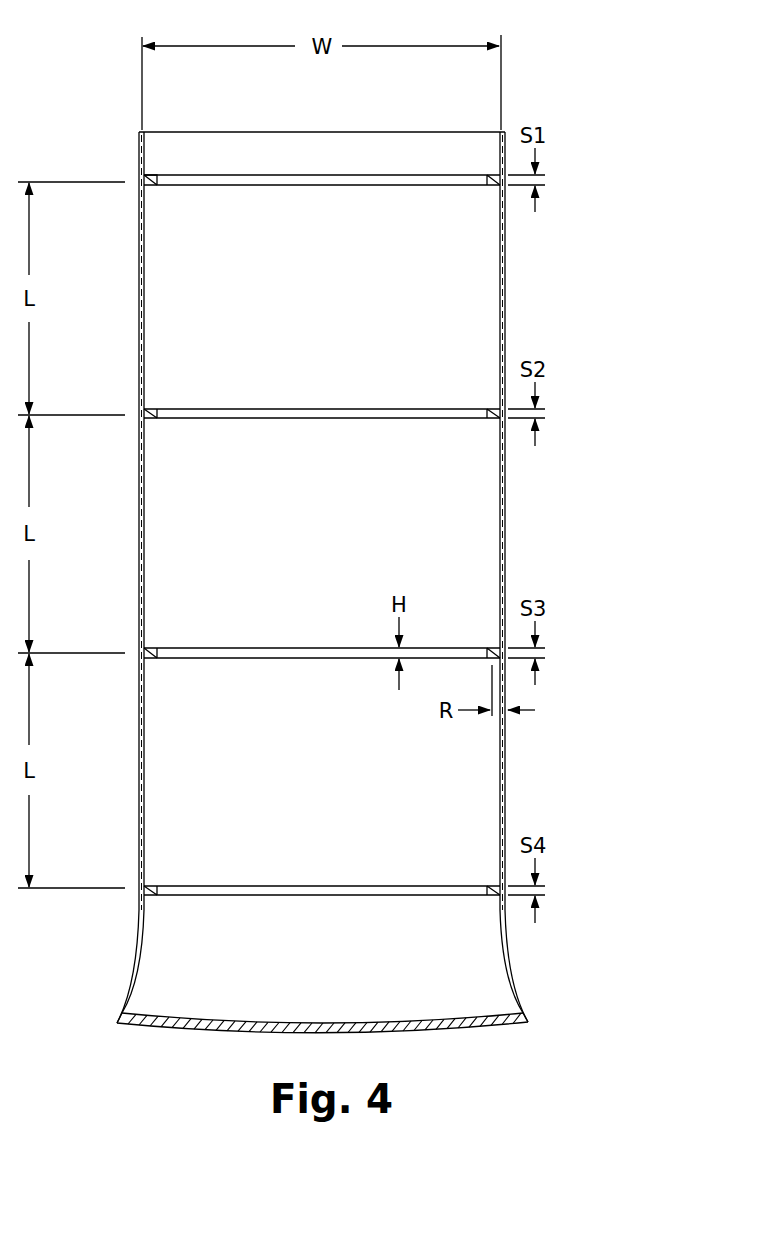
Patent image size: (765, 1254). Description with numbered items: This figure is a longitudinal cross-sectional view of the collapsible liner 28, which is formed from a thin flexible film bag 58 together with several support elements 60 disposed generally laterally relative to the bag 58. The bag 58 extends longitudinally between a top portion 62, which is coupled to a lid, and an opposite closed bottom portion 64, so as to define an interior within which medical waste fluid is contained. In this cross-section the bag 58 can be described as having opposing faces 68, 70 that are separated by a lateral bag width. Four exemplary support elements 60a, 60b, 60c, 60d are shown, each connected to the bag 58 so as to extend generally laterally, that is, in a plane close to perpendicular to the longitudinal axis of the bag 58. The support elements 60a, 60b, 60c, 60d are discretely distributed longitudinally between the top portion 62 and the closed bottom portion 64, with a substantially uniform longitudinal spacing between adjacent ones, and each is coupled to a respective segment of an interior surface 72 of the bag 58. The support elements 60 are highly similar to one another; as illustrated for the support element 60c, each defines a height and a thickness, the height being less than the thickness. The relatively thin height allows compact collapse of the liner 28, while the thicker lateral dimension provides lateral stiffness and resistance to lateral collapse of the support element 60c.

The collapsible liner 28 is at (330, 549).
The bag 58 is at (137, 150).
The support elements 60 is at (277, 535).
The support element 60a is at (489, 188).
The support element 60b is at (486, 406).
The support element 60c is at (488, 644).
The support element 60d is at (487, 882).
The top portion 62 is at (403, 130).
The closed bottom portion 64 is at (435, 1032).
The face 68 is at (344, 577).
The face 70 is at (506, 298).
The interior surface 72 is at (500, 150).